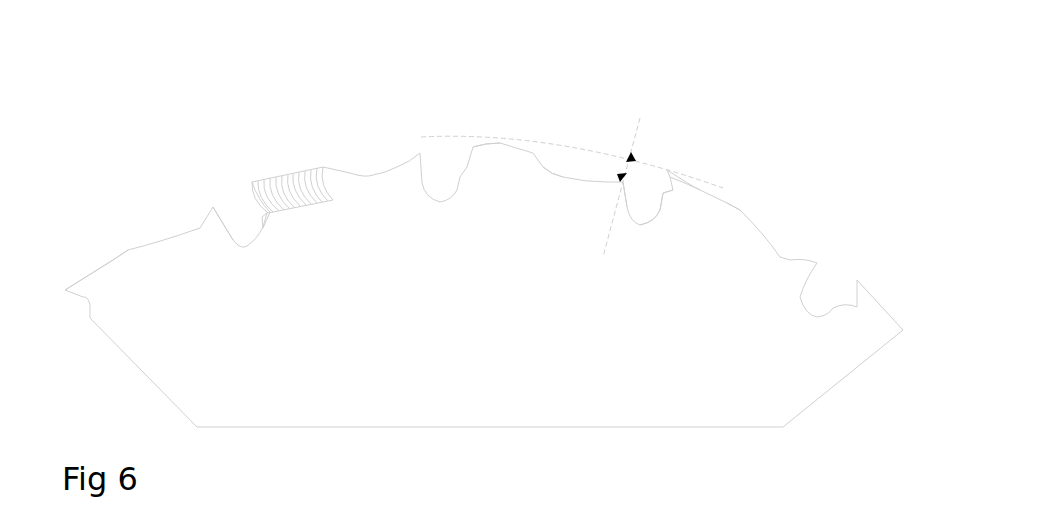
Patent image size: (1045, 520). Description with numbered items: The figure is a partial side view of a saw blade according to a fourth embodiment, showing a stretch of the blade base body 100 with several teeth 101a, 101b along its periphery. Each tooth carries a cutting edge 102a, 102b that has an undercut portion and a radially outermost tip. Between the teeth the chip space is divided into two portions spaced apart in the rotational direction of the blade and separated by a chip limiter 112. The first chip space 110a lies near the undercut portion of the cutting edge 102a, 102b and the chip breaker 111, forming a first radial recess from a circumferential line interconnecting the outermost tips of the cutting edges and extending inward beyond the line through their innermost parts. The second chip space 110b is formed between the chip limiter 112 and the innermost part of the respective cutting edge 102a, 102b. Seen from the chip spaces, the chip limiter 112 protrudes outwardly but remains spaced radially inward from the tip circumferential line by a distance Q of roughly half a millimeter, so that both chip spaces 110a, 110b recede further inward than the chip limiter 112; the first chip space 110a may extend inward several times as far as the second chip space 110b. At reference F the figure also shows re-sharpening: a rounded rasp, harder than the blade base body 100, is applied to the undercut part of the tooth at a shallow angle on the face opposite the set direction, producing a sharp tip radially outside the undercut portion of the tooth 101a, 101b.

The blade base body 100 is at (511, 375).
The re-sharpening location F is at (260, 178).
The chip limiter 112 is at (210, 217).
The cutting edge 102a is at (112, 260).
The cutting edge 102b is at (725, 207).
The tooth 101a is at (107, 293).
The tooth 101b is at (700, 207).
The first chip space 110a is at (645, 192).
The second chip space 110b is at (567, 162).
The chip breaker 111 is at (658, 207).
The distance Q is at (572, 174).